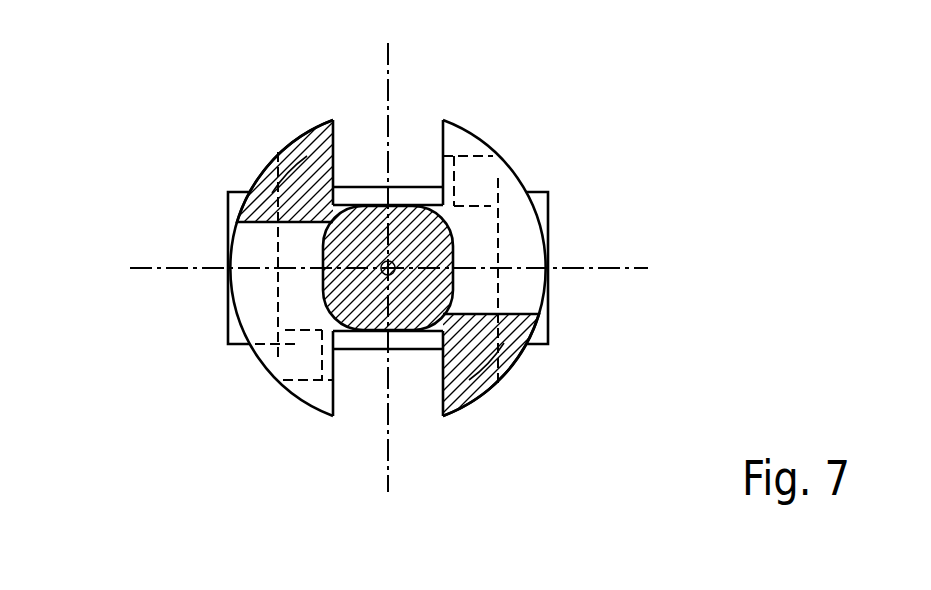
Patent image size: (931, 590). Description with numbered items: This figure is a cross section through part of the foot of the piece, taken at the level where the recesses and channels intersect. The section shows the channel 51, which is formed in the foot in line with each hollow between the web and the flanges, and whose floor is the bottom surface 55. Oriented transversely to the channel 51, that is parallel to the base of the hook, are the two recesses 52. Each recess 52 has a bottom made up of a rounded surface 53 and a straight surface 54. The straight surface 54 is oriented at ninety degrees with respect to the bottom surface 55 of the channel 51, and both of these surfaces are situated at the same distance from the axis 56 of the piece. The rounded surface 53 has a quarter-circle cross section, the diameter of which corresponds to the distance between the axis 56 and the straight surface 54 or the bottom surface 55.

The channel 51 is at (410, 143).
The recess 52 is at (480, 188).
The rounded surface 53 is at (461, 224).
The straight surface 54 is at (307, 256).
The bottom surface 55 is at (356, 190).
The axis 56 is at (323, 296).